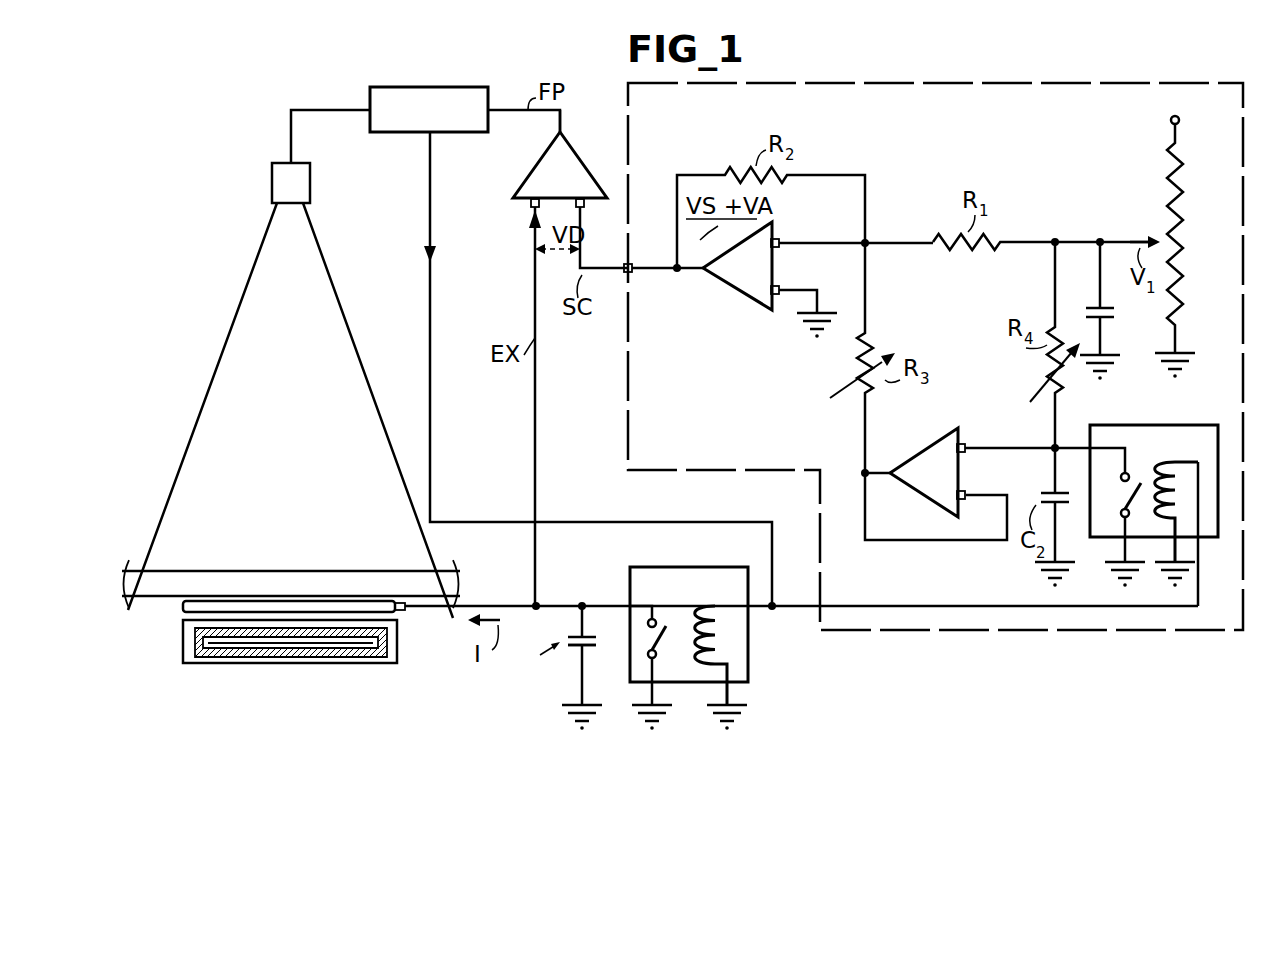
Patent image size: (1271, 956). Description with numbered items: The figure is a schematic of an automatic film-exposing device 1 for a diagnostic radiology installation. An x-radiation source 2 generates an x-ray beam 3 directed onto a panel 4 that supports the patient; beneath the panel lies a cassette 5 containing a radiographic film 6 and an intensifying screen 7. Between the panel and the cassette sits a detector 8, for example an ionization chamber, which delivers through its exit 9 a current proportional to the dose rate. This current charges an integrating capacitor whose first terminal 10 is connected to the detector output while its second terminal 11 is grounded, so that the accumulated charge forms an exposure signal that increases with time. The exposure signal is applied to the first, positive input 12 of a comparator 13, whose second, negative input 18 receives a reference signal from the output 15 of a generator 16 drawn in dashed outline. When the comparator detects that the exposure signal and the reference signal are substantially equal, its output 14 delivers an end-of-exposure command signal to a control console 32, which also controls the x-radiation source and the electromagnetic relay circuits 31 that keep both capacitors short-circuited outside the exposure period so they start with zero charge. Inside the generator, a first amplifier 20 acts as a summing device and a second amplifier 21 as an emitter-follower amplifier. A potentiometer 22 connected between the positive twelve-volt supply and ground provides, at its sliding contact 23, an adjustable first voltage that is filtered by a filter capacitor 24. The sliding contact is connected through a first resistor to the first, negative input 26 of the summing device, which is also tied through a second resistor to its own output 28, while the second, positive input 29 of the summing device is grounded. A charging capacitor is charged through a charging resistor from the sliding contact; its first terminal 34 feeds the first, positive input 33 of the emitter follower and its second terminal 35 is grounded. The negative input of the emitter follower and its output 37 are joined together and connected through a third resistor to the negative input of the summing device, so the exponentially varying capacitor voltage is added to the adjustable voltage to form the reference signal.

The automatic film-exposing device 1 is at (528, 48).
The x-radiation source 2 is at (272, 178).
The x-ray beam 3 is at (280, 228).
The panel 4 is at (138, 569).
The cassette 5 is at (188, 662).
The radiographic film 6 is at (285, 655).
The intensifying screen 7 is at (215, 657).
The detector 8 is at (183, 605).
The exit 9 is at (400, 612).
The first terminal of capacitor C1 10 is at (590, 636).
The second terminal of capacitor C1 11 is at (580, 648).
The first (positive) input of comparator 12 is at (530, 206).
The comparator 13 is at (545, 160).
The output of comparator 14 is at (562, 133).
The output of generator 15 is at (628, 274).
The generator 16 is at (993, 85).
The second (negative) input of comparator 18 is at (586, 208).
The first amplifier (summing device) 20 is at (748, 302).
The second amplifier (emitter-follower amplifier) 21 is at (940, 430).
The potentiometer 22 is at (1185, 210).
The sliding contact 23 is at (1160, 240).
The filter capacitor 24 is at (1112, 316).
The first (negative) input of summing device 26 is at (780, 248).
The output of summing device 28 is at (703, 272).
The second (positive) input of summing device 29 is at (778, 298).
The electromagnetic relay circuit 31 is at (750, 668).
The control console 32 is at (440, 87).
The first (positive) input of emitter-follower amplifier 33 is at (966, 446).
The first terminal of charging capacitor C2 34 is at (1060, 494).
The second terminal of charging capacitor C2 / second (negative) input of emitter-fo 35 is at (968, 493).
The output of emitter-follower amplifier 37 is at (890, 470).